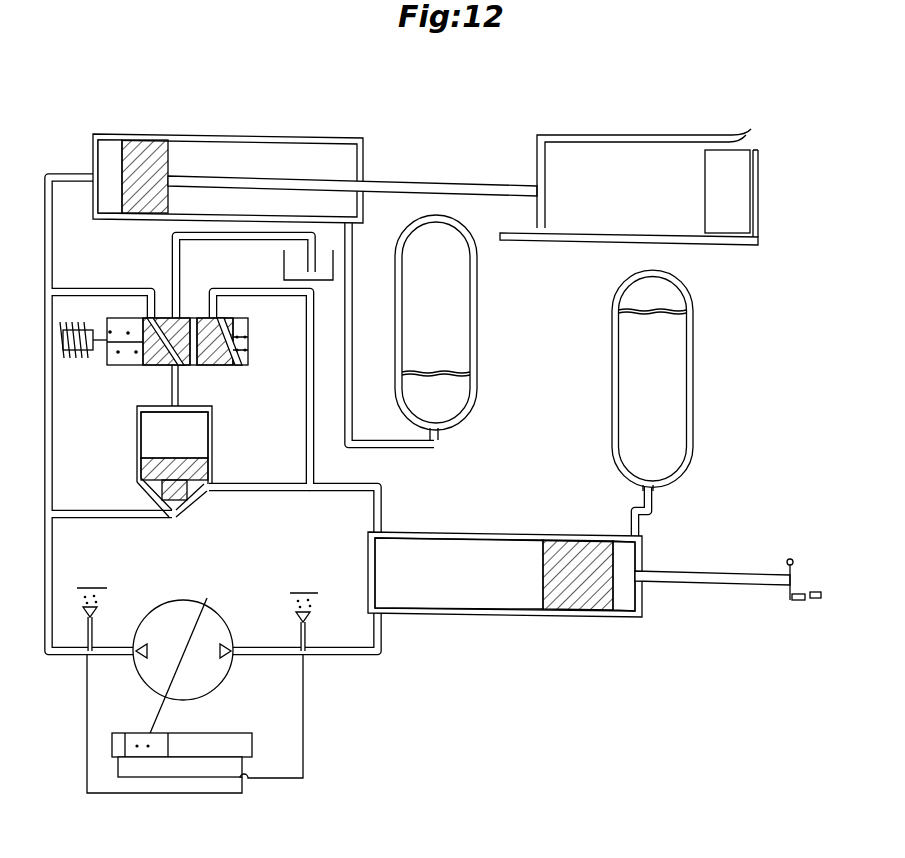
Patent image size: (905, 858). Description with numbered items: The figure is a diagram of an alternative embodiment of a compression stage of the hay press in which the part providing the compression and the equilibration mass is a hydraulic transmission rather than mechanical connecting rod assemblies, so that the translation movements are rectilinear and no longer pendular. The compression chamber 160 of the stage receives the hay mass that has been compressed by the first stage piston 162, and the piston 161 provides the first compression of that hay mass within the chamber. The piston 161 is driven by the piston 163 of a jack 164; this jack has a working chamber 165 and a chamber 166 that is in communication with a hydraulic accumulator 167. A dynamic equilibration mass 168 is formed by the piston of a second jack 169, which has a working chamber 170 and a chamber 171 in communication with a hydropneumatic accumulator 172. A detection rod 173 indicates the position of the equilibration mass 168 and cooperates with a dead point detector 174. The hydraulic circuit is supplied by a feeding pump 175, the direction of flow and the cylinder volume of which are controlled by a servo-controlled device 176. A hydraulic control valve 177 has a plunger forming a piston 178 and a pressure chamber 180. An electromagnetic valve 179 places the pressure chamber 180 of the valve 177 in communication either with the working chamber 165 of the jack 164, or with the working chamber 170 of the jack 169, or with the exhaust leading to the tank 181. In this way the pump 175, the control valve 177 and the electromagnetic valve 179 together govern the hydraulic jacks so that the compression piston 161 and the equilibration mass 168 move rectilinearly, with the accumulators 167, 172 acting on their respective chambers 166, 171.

The compression chamber 160 is at (728, 246).
The piston 161 is at (735, 192).
The first stage piston 162 is at (588, 137).
The piston of the jack 163 is at (163, 160).
The jack 164 is at (303, 135).
The working chamber 165 is at (107, 150).
The chamber in communication with the hydraulic accumulator 166 is at (347, 160).
The hydraulic accumulator 167 is at (476, 333).
The dynamic equilibration mass 168 is at (572, 598).
The jack 169 is at (478, 532).
The working chamber 170 is at (484, 595).
The chamber in communication with the hydropneumatic accumulator 171 is at (645, 548).
The hydropneumatic accumulator 172 is at (692, 426).
The detection rod 173 is at (722, 575).
The dead point detector 174 is at (792, 563).
The feeding pump 175 is at (210, 612).
The servo-controlled device 176 is at (222, 735).
The hydraulic control valve 177 is at (213, 438).
The plunger forming a piston 178 is at (205, 469).
The electromagnetic valve 179 is at (248, 343).
The pressure chamber 180 is at (205, 423).
The tank 181 is at (332, 282).